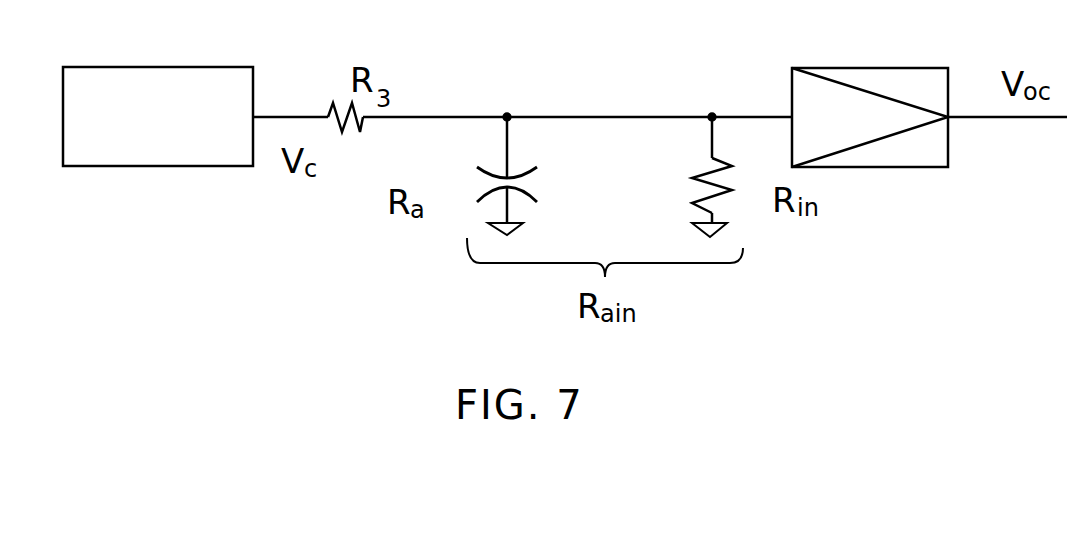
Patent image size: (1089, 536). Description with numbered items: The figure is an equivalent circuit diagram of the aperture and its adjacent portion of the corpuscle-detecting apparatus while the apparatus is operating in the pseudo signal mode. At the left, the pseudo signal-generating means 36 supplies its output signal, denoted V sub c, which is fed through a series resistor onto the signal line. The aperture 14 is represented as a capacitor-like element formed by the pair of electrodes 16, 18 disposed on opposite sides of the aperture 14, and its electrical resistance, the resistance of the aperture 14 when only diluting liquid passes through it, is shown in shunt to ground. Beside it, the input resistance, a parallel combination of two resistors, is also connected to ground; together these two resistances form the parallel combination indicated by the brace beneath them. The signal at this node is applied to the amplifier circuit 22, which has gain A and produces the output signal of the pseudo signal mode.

The pseudo signal-generating means 36 is at (160, 167).
The amplifier circuit 22 is at (870, 94).
The aperture 14 is at (483, 187).
The electrode 16 is at (518, 172).
The electrode 18 is at (525, 193).